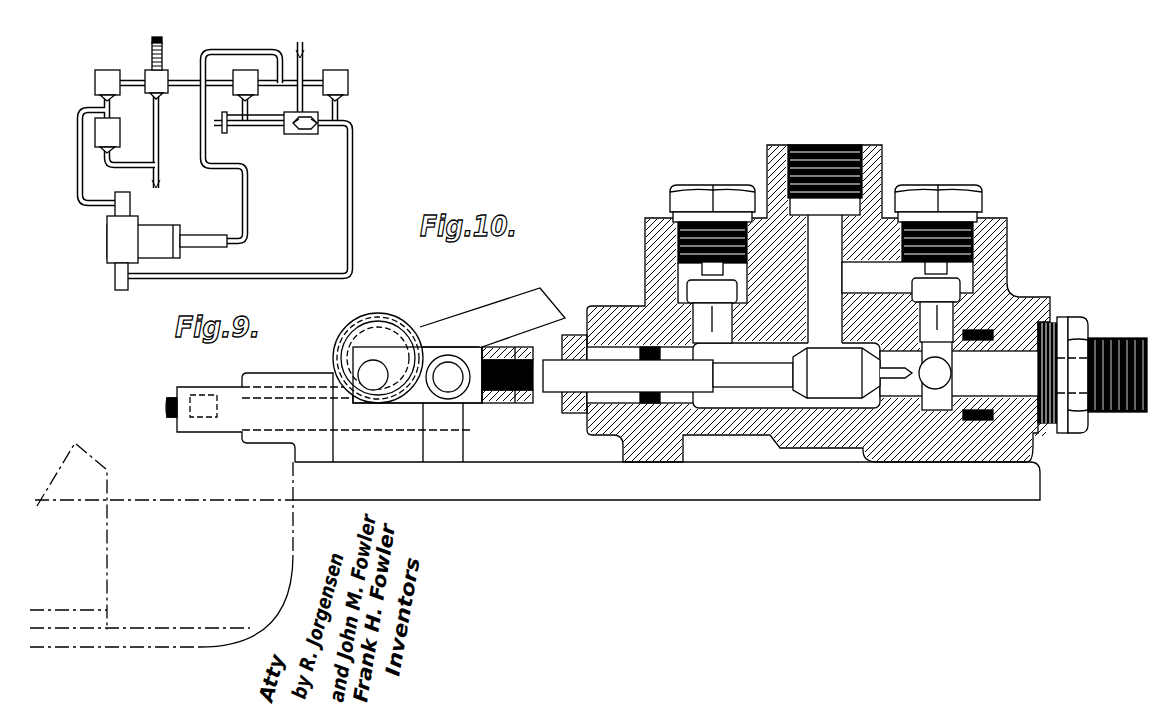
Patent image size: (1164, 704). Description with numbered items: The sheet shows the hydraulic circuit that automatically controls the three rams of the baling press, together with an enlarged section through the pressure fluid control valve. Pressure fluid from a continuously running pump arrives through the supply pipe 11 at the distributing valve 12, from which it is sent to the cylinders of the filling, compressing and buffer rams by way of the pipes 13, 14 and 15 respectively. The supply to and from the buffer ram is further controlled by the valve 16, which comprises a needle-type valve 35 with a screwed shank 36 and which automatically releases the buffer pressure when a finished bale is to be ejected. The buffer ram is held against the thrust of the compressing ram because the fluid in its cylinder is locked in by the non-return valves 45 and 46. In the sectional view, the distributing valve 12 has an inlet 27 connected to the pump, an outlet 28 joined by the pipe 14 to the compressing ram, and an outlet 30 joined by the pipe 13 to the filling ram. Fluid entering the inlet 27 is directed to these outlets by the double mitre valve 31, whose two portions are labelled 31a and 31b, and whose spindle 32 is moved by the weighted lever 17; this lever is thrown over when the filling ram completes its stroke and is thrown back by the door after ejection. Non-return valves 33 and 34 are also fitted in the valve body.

In FIG. 9, the supply pipe 11 is at (310, 48).
In FIG. 9, the distributing valve 12 is at (306, 146).
In FIG. 10, the distributing valve 12 is at (814, 303).
In FIG. 9, the pipe 13 is at (200, 135).
In FIG. 9, the pipe 14 is at (348, 185).
In FIG. 9, the pipe 15 is at (80, 170).
In FIG. 9, the valve 16 is at (170, 68).
In FIG. 10, the weighted lever 17 is at (478, 312).
In FIG. 9, the inlet 27 is at (296, 90).
In FIG. 10, the inlet 27 is at (788, 163).
In FIG. 9, the outlet 28 is at (346, 123).
In FIG. 10, the outlet 28 is at (1013, 375).
In FIG. 10, the outlet 30 is at (940, 373).
In FIG. 9, the double mitre valve 31 is at (302, 131).
In FIG. 10, the double mitre valve 31 is at (852, 373).
In FIG. 9, the valve right end 31a is at (316, 127).
In FIG. 10, the valve right end 31a is at (850, 374).
In FIG. 9, the valve left end 31b is at (292, 126).
In FIG. 10, the valve left end 31b is at (822, 373).
In FIG. 9, the spindle 32 is at (244, 128).
In FIG. 10, the spindle 32 is at (553, 388).
In FIG. 9, the non-return valve 33 is at (348, 92).
In FIG. 10, the non-return valve 33 is at (960, 285).
In FIG. 9, the non-return valve 34 is at (240, 97).
In FIG. 10, the non-return valve 34 is at (690, 288).
In FIG. 9, the needle valve 35 is at (148, 94).
In FIG. 9, the screwed shank 36 is at (163, 47).
In FIG. 9, the non-return valve 45 is at (94, 85).
In FIG. 9, the non-return valve 46 is at (121, 137).